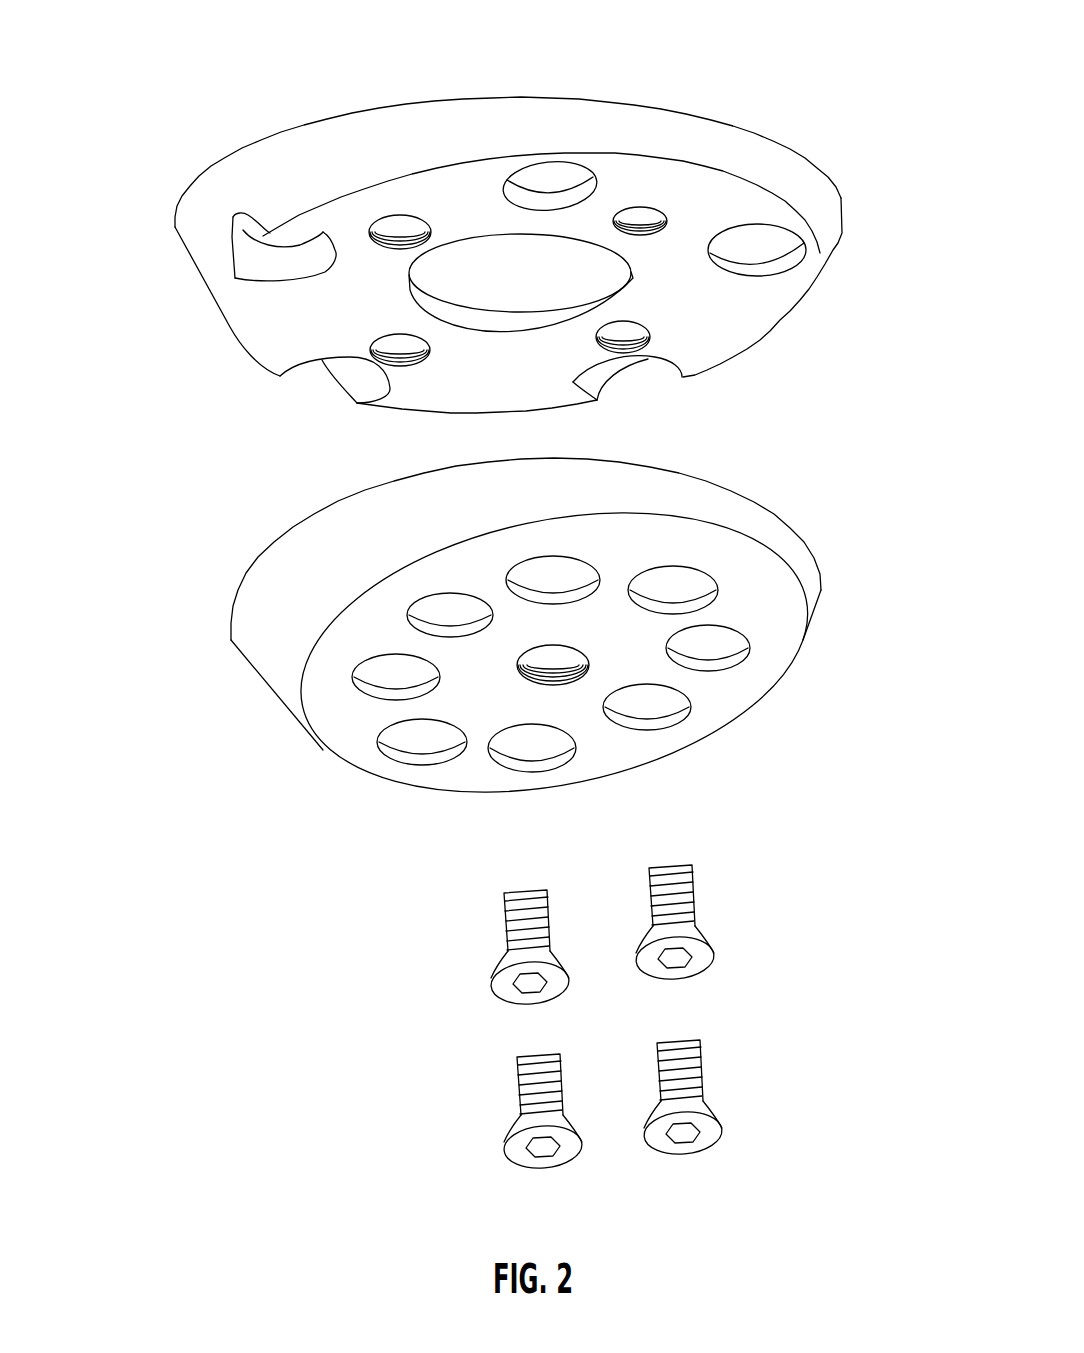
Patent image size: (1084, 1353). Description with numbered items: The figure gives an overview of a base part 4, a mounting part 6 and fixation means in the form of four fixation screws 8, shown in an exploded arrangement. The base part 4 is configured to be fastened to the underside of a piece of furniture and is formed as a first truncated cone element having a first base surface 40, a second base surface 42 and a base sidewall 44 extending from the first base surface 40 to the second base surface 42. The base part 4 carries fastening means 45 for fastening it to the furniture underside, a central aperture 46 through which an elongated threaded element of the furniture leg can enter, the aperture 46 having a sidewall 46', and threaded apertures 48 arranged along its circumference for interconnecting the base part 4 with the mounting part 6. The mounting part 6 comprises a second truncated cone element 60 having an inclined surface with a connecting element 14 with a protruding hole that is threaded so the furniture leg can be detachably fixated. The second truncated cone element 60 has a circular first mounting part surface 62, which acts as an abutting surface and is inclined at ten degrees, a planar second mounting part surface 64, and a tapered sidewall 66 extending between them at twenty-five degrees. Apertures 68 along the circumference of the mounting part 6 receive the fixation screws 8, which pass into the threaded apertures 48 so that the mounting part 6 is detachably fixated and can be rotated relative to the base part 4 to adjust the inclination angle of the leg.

The base part 4 is at (227, 378).
The mounting part 6 is at (297, 824).
The fixation screws 8 is at (477, 943).
The connecting element 14 is at (565, 690).
The first base surface 40 is at (713, 283).
The second base surface 42 is at (232, 142).
The base sidewall 44 is at (203, 282).
The fastening means 45 is at (540, 177).
The aperture 46 is at (474, 174).
The sidewall of the aperture 46' is at (662, 387).
The threaded apertures 48 is at (640, 213).
The second truncated cone element 60 is at (521, 713).
The first mounting part surface 62 is at (760, 622).
The second mounting part surface 64 is at (242, 582).
The tapered sidewall 66 is at (270, 688).
The apertures 68 is at (703, 647).